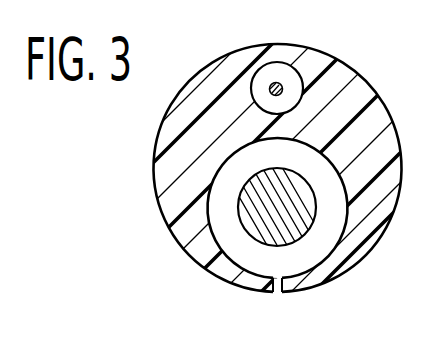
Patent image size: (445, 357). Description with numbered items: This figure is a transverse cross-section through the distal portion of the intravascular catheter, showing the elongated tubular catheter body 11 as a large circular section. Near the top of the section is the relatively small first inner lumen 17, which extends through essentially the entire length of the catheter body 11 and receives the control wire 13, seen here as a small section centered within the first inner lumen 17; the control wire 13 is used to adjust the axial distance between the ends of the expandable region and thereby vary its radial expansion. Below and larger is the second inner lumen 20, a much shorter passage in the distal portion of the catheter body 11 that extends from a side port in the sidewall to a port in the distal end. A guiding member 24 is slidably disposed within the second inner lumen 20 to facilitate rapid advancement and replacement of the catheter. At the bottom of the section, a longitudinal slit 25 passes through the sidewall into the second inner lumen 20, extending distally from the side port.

The catheter body 11 is at (155, 150).
The control wire 13 is at (284, 90).
The first inner lumen 17 is at (275, 71).
The second inner lumen 20 is at (339, 229).
The guiding member 24 is at (255, 218).
The longitudinal slit 25 is at (273, 291).